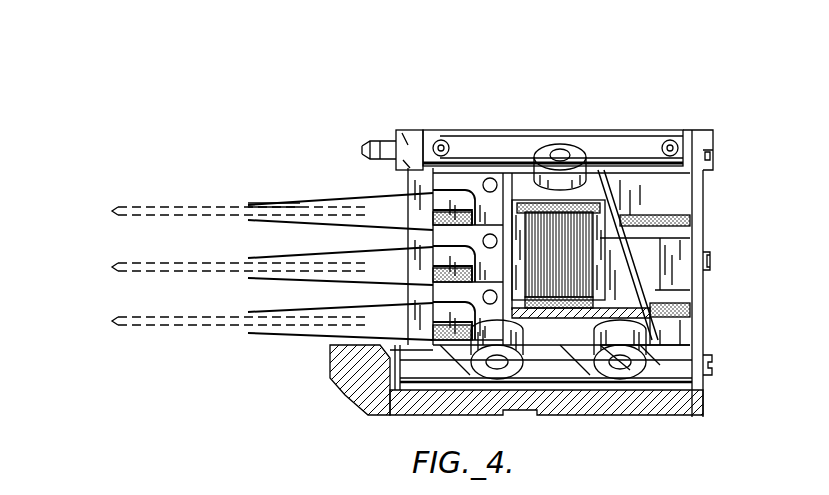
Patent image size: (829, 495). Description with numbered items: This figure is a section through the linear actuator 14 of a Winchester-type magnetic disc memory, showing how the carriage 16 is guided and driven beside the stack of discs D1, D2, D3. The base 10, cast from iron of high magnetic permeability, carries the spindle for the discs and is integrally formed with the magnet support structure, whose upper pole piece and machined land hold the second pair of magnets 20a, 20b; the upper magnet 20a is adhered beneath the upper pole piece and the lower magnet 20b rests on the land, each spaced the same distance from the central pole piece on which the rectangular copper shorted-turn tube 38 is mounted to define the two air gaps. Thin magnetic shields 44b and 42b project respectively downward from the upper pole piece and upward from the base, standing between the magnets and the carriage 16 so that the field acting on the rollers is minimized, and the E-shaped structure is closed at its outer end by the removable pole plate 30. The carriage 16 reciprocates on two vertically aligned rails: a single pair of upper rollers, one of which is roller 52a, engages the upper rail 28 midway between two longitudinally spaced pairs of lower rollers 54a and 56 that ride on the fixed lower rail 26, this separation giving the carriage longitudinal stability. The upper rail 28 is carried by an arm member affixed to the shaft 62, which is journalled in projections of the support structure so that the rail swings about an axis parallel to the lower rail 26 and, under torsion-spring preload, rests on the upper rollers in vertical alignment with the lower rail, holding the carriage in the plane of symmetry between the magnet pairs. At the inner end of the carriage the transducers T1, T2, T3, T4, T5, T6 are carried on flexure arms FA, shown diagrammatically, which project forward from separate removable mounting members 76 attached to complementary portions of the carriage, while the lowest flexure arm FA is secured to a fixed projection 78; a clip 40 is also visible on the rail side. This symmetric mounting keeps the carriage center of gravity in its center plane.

The base 10 is at (667, 414).
The linear actuator 14 is at (575, 96).
The carriage 16 is at (585, 136).
The upper magnet of second pair 20a is at (690, 222).
The lower magnet of second pair 20b is at (688, 311).
The lower rail 26 is at (675, 390).
The upper rail 28 is at (652, 142).
The pole plate 30 is at (700, 206).
The shorted turn member 38 is at (683, 277).
The clip 40 is at (713, 365).
The shield 42b is at (685, 335).
The shield 44b is at (680, 188).
The upper roller 52a is at (556, 146).
The lower roller 54a is at (614, 370).
The lower roller pair 56 is at (505, 370).
The shaft 62 is at (384, 140).
The mounting member 76 is at (445, 197).
The fixed projection 78 is at (378, 413).
The flexure arm FA is at (312, 202).
The disc D1 is at (138, 207).
The disc D2 is at (142, 263).
The disc D3 is at (142, 317).
The transducer T1 is at (250, 200).
The transducer T2 is at (251, 221).
The transducer T3 is at (250, 258).
The transducer T4 is at (251, 279).
The transducer T5 is at (250, 312).
The transducer T6 is at (251, 334).